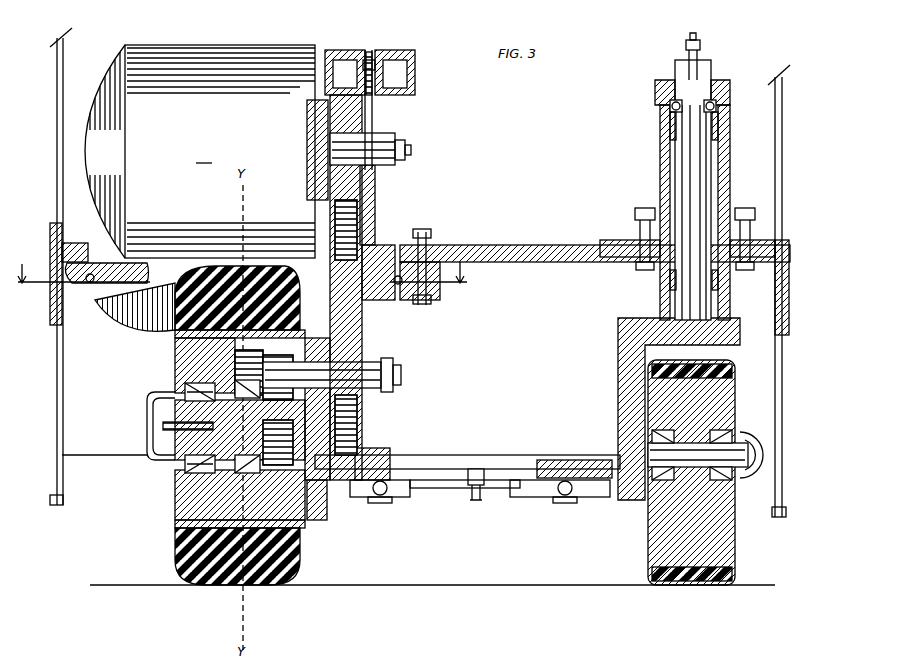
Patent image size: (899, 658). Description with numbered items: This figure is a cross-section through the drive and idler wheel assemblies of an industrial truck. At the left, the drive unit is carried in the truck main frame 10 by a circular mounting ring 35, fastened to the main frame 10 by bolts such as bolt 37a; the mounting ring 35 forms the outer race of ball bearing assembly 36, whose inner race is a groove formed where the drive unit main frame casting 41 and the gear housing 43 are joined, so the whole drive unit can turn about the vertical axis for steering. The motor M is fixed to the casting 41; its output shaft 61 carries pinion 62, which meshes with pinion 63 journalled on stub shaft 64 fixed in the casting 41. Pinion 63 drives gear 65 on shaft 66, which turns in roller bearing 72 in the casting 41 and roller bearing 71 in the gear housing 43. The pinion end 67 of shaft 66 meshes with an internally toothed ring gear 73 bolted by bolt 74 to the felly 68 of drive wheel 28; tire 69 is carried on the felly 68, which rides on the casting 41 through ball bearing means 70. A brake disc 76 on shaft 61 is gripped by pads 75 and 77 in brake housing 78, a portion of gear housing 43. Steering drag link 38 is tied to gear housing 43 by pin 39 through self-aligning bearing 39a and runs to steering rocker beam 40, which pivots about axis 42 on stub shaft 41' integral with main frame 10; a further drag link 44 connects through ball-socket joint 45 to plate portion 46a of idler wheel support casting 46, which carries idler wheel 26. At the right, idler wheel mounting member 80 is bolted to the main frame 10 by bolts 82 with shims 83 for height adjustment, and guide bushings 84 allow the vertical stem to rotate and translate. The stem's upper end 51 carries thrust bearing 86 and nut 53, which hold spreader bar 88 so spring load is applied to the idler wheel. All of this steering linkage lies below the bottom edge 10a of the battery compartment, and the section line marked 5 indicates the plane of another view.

The main frame 10 is at (52, 232).
The bottom edge of the battery compartment 10a is at (108, 456).
The section line 5- 5 is at (241, 272).
The idler wheel 26 is at (758, 399).
The drive wheel 28 is at (118, 426).
The mounting ring 35 is at (66, 284).
The ball bearing assembly 36 is at (90, 283).
The bolt 37a is at (428, 234).
The steering drag-link 38 is at (404, 498).
The pin 39 is at (366, 500).
The ball joint or self-aligning bearing 39a is at (384, 505).
The steering rocker beam 40 is at (442, 490).
The drive unit main frame casting 41 is at (215, 280).
The stub shaft 41' is at (474, 520).
The pivot axis 42 is at (470, 466).
The gear housing 43 is at (368, 256).
The drag-link 44 is at (516, 498).
The ball-socket joint 45 is at (560, 503).
The idler wheel support casting 46 is at (618, 348).
The plate portion 46a is at (584, 460).
The upper end of stem 51 is at (700, 92).
The nut 53 is at (686, 60).
The output shaft 61 is at (376, 150).
The pinion 62 is at (400, 166).
The pinion 63 is at (376, 186).
The stub shaft 64 is at (364, 226).
The gear 65 is at (362, 326).
The shaft 66 is at (375, 422).
The pinion end 67 is at (234, 372).
The felly 68 is at (176, 335).
The tire 69 is at (200, 272).
The ball bearing means 70 is at (236, 389).
The roller bearing 71 is at (400, 362).
The roller bearing 72 is at (322, 500).
The ring gear 73 is at (302, 545).
The bolt 74 is at (176, 352).
The brake pad 75 is at (368, 50).
The brake disc 76 is at (374, 110).
The brake pad 77 is at (378, 58).
The brake housing 78 is at (333, 50).
The idler wheel mounting member 80 is at (660, 174).
The bolts 82 is at (636, 214).
The shims 83 is at (632, 246).
The guide bushings 84 is at (670, 150).
The thrust bearing 86 is at (672, 100).
The spreader bar 88 is at (655, 95).
The motor M is at (200, 151).